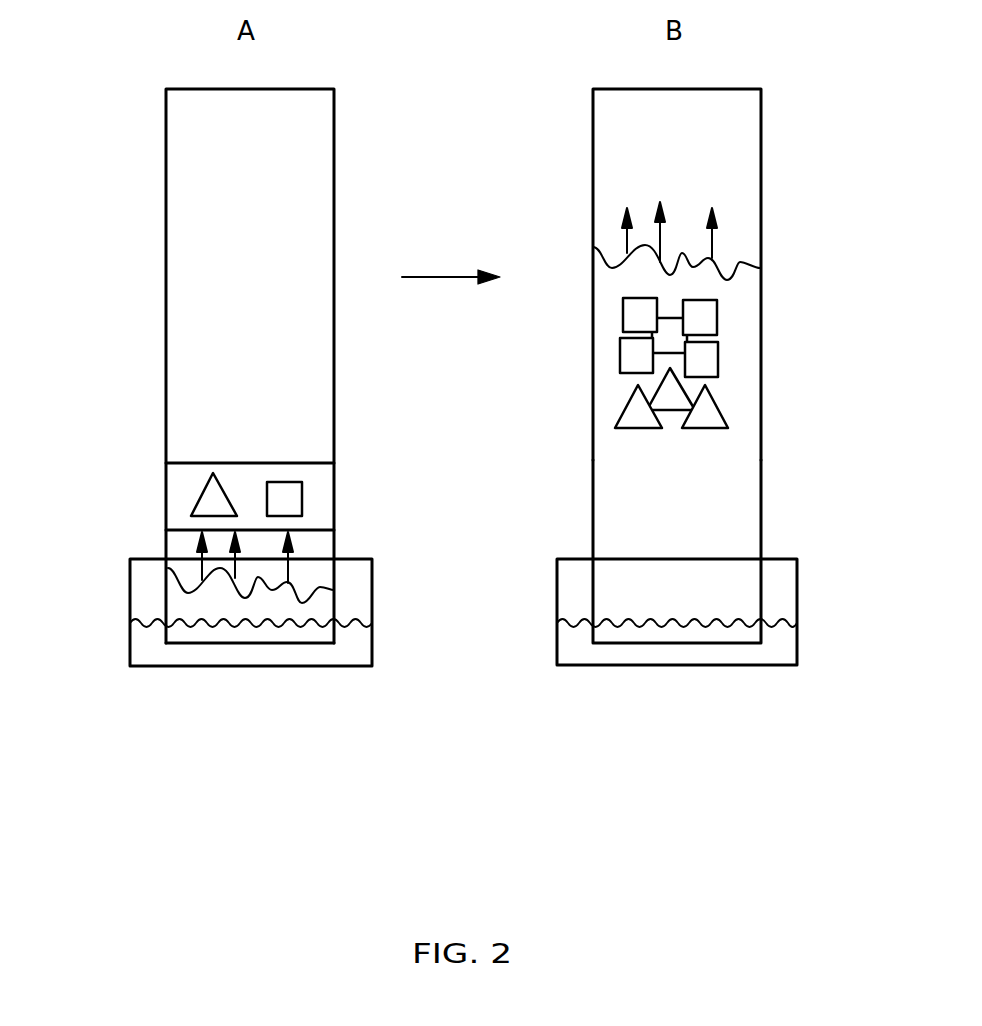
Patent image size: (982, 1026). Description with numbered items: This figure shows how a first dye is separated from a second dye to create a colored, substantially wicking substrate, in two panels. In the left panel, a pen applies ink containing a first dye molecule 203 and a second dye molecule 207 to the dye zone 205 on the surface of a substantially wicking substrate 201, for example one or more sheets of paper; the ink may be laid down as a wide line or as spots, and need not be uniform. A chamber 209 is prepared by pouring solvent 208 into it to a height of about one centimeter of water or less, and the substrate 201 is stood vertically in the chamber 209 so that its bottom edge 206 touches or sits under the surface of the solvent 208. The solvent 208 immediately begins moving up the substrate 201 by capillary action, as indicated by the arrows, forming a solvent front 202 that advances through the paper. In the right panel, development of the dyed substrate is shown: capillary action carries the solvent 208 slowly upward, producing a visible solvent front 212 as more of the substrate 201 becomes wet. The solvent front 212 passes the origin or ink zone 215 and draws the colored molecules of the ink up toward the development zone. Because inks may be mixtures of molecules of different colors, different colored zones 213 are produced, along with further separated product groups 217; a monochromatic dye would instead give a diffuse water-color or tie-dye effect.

The substantially wicking substrate 201 is at (165, 395).
The solvent front 202 is at (317, 587).
The first dye molecule 203 is at (202, 492).
The dye zone 205 is at (180, 508).
The bottom edge 206 is at (258, 645).
The second dye molecule 207 is at (303, 498).
The solvent 208 is at (143, 633).
The chamber 209 is at (130, 592).
The solvent front 212 is at (723, 262).
The different colored zones 213 is at (720, 408).
The origin zone 215 is at (607, 502).
The second reaction products 217 is at (718, 317).